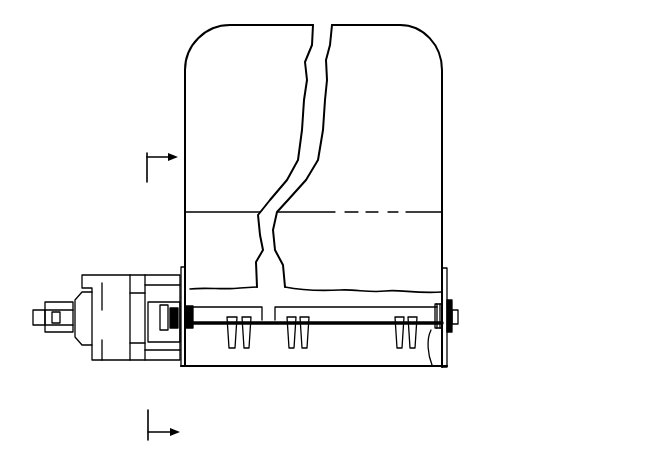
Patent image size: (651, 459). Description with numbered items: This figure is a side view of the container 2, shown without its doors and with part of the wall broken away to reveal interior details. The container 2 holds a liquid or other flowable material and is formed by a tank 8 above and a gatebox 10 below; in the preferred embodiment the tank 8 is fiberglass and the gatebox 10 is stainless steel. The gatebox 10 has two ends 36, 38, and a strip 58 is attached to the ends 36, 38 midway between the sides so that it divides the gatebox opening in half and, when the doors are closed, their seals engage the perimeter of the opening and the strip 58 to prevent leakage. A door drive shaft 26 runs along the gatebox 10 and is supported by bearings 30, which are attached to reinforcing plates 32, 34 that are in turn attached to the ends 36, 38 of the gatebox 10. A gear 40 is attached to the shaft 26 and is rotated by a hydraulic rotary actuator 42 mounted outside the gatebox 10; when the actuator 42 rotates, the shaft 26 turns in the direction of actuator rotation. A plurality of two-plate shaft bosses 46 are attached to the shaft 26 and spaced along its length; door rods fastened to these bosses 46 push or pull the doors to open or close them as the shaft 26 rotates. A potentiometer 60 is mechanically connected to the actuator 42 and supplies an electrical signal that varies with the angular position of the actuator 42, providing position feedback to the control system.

The container 2 is at (494, 147).
The tank 8 is at (418, 85).
The gatebox 10 is at (408, 230).
The door drive shaft 26 is at (432, 367).
The bearings 30 is at (190, 326).
The reinforcing plate 32 is at (452, 345).
The reinforcing plate 34 is at (183, 366).
The end of gatebox 36 is at (183, 235).
The end of gatebox 38 is at (443, 253).
The gear 40 is at (190, 293).
The hydraulic rotary actuator 42 is at (108, 355).
The two-plate shaft bosses 46 is at (237, 349).
The strip 58 is at (392, 367).
The potentiometer 60 is at (62, 336).